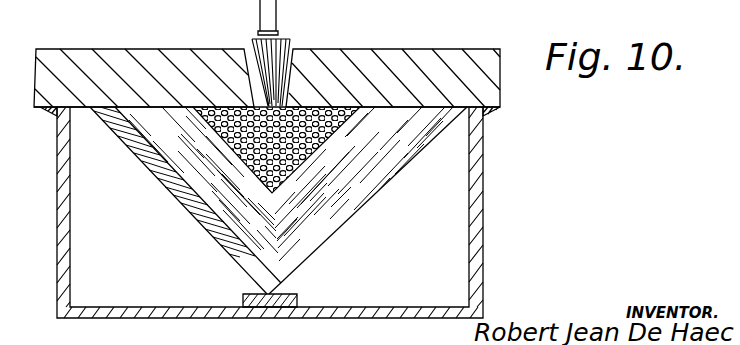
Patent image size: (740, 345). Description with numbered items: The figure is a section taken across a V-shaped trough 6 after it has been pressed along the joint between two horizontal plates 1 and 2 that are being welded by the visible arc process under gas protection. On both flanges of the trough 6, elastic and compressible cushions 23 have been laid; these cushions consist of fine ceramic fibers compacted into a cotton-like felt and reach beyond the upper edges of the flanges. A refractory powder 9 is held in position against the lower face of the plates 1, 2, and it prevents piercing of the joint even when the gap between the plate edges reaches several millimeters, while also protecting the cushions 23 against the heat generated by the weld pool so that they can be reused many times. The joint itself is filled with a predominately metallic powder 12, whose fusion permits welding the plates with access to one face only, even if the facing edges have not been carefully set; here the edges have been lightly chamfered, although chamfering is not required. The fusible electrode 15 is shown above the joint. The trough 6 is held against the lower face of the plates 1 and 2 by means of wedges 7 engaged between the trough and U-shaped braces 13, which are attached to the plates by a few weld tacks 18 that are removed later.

The plate 1 is at (97, 62).
The plate 2 is at (447, 62).
The trough 6 is at (407, 152).
The wedge 7 is at (293, 300).
The refractory powder 9 is at (240, 157).
The predominately metallic powder 12 is at (267, 78).
The U-shaped brace 13 is at (482, 236).
The fusible electrode 15 is at (278, 20).
The weld tack 18 is at (48, 110).
The elastic and compressible cushion 23 is at (247, 213).